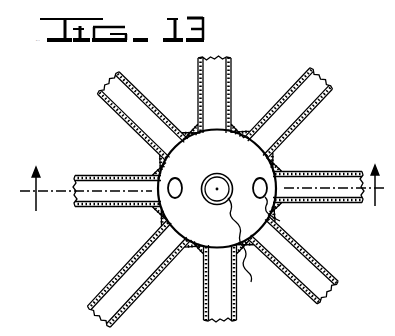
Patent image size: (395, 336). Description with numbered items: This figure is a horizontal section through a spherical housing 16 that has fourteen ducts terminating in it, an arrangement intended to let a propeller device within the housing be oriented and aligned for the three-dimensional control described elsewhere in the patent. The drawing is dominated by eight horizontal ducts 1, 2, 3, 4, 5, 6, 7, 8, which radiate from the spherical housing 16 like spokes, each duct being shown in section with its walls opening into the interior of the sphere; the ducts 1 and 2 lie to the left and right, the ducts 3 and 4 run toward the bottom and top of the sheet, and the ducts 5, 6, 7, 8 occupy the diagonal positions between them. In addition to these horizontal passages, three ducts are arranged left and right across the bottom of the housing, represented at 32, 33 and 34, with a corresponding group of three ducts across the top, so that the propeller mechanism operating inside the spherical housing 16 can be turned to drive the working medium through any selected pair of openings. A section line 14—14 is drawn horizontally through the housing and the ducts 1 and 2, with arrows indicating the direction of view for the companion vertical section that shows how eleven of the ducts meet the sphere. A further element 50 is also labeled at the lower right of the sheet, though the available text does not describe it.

The horizontal duct 1 is at (117, 207).
The horizontal duct 2 is at (304, 173).
The horizontal duct 3 is at (220, 265).
The horizontal duct 4 is at (220, 86).
The horizontal duct 5 is at (134, 277).
The horizontal duct 6 is at (284, 122).
The horizontal duct 7 is at (297, 270).
The horizontal duct 8 is at (133, 111).
The section line 14 is at (198, 188).
The spherical housing 16 is at (241, 122).
The bottom duct 32 is at (163, 208).
The bottom duct 33 is at (246, 249).
The bottom duct 34 is at (283, 215).
The adjacent element 50 is at (394, 333).